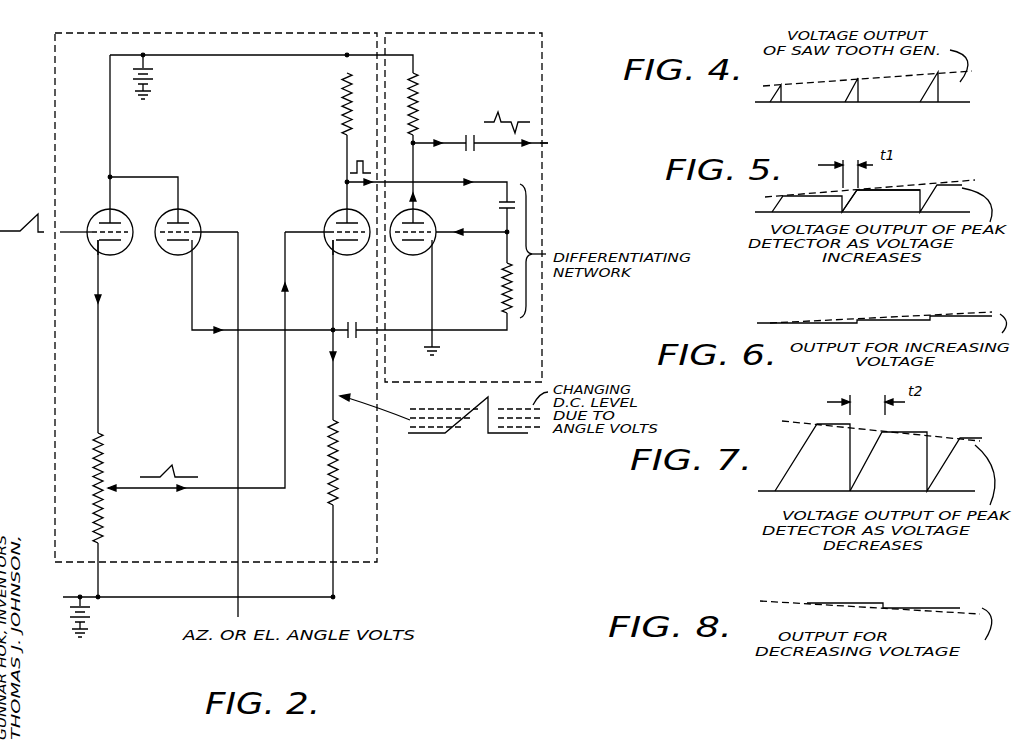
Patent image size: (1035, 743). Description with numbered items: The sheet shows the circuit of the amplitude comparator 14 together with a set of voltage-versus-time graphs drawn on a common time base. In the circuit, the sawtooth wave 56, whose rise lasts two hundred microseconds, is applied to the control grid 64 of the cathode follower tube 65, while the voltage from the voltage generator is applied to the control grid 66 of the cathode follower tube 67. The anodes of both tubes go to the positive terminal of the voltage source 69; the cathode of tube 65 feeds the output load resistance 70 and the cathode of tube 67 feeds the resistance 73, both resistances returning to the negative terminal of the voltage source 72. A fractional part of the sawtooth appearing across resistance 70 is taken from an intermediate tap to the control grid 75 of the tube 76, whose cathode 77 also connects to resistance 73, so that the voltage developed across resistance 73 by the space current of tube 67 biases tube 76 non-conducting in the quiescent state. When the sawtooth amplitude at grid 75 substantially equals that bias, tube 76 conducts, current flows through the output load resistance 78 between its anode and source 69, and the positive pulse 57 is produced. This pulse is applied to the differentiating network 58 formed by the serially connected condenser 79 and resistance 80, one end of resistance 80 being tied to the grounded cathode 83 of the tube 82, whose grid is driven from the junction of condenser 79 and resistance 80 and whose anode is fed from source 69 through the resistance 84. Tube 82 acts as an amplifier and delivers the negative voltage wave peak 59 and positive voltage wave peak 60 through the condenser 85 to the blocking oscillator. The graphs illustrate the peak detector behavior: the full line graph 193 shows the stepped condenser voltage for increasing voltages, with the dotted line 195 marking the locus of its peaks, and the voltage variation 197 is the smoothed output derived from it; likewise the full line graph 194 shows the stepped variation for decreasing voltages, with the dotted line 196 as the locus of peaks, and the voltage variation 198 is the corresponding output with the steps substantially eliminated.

In FIG. 2, the amplitude comparator 14 is at (133, 34).
In FIG. 2, the differentiating network 58 is at (396, 34).
In FIG. 2, the sawtooth wave 56 is at (26, 222).
In FIG. 2, the positive pulse 57 is at (363, 152).
In FIG. 2, the negative voltage wave peak 59 is at (545, 131).
In FIG. 2, the positive voltage wave peak 60 is at (506, 113).
In FIG. 2, the control grid 64 is at (124, 244).
In FIG. 2, the cathode follower tube 65 is at (104, 210).
In FIG. 2, the control grid 66 is at (198, 224).
In FIG. 2, the cathode follower tube 67 is at (212, 191).
In FIG. 2, the voltage source 69 is at (153, 79).
In FIG. 2, the output load resistance 70 is at (104, 449).
In FIG. 2, the voltage source 72 is at (98, 626).
In FIG. 2, the resistance 73 is at (339, 462).
In FIG. 2, the control grid 75 is at (333, 246).
In FIG. 2, the tube 76 is at (334, 210).
In FIG. 2, the cathode 77 is at (345, 258).
In FIG. 2, the output load resistance 78 is at (342, 104).
In FIG. 2, the condenser 79 is at (503, 212).
In FIG. 2, the resistance 80 is at (502, 290).
In FIG. 2, the tube 82 is at (450, 198).
In FIG. 2, the cathode 83 is at (416, 258).
In FIG. 2, the resistance 84 is at (419, 87).
In FIG. 2, the condenser 85 is at (477, 149).
In FIG. 5, the full line graph 193 is at (856, 194).
In FIG. 7, the full line graph 194 is at (870, 455).
In FIG. 5, the dotted line 195 is at (919, 184).
In FIG. 7, the dotted line 196 is at (809, 422).
In FIG. 6, the voltage variation 197 is at (937, 323).
In FIG. 8, the voltage variation 198 is at (884, 603).